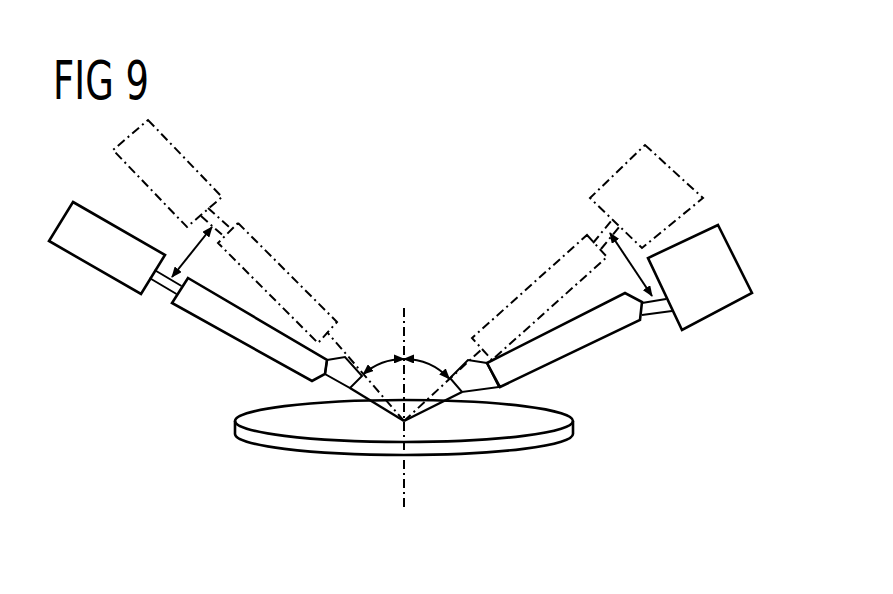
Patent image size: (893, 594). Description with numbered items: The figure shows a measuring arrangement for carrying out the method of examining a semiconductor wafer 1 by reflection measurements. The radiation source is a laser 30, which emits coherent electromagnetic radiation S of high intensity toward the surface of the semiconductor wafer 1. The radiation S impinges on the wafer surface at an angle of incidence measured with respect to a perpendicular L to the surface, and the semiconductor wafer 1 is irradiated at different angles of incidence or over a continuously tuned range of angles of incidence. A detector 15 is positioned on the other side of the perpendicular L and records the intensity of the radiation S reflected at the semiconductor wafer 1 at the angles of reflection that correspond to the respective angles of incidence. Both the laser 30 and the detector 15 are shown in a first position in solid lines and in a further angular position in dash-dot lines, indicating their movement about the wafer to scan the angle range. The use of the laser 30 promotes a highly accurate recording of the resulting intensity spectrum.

The semiconductor wafer 1 is at (353, 453).
The perpendicular L is at (404, 480).
The laser 30 is at (95, 268).
The detector 15 is at (723, 312).
The electromagnetic radiation S is at (235, 341).